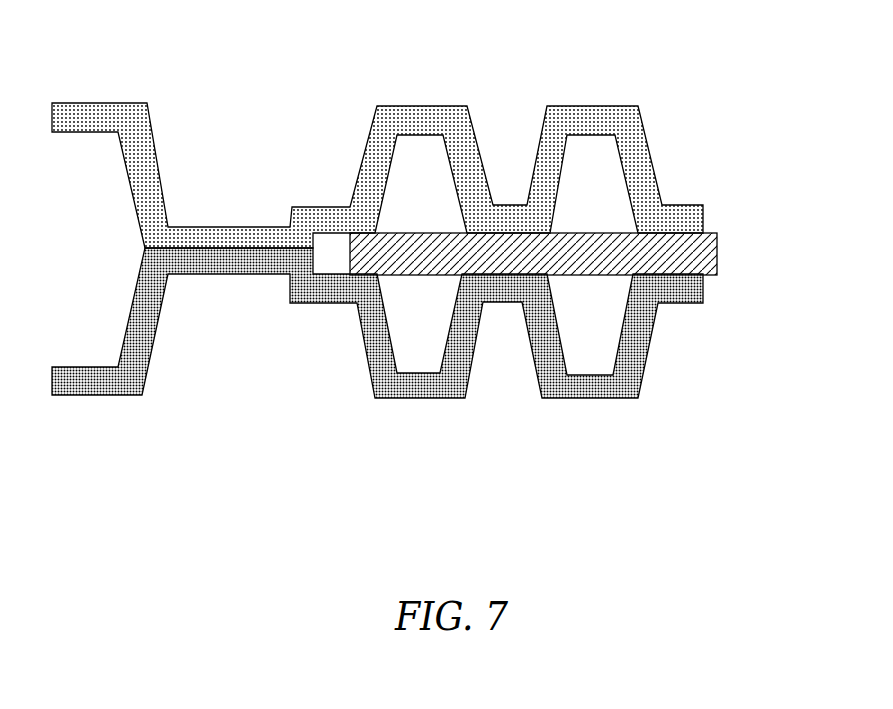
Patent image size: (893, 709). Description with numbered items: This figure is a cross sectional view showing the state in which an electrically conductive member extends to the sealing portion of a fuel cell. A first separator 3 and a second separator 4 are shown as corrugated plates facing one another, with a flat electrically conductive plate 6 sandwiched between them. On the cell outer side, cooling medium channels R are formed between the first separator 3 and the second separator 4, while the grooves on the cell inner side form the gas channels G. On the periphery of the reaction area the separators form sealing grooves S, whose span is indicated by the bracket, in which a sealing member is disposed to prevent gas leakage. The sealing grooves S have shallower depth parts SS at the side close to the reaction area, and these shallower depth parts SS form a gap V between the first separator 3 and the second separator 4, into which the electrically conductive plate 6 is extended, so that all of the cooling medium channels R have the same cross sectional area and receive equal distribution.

The first separator 3 is at (703, 212).
The second separator 4 is at (703, 298).
The intermediate plate 6 is at (717, 250).
The sealing grooves S is at (377, 91).
The shallower depth parts SS is at (326, 207).
The cooling medium channels R is at (421, 254).
The groove G is at (506, 253).
The gap V is at (327, 258).